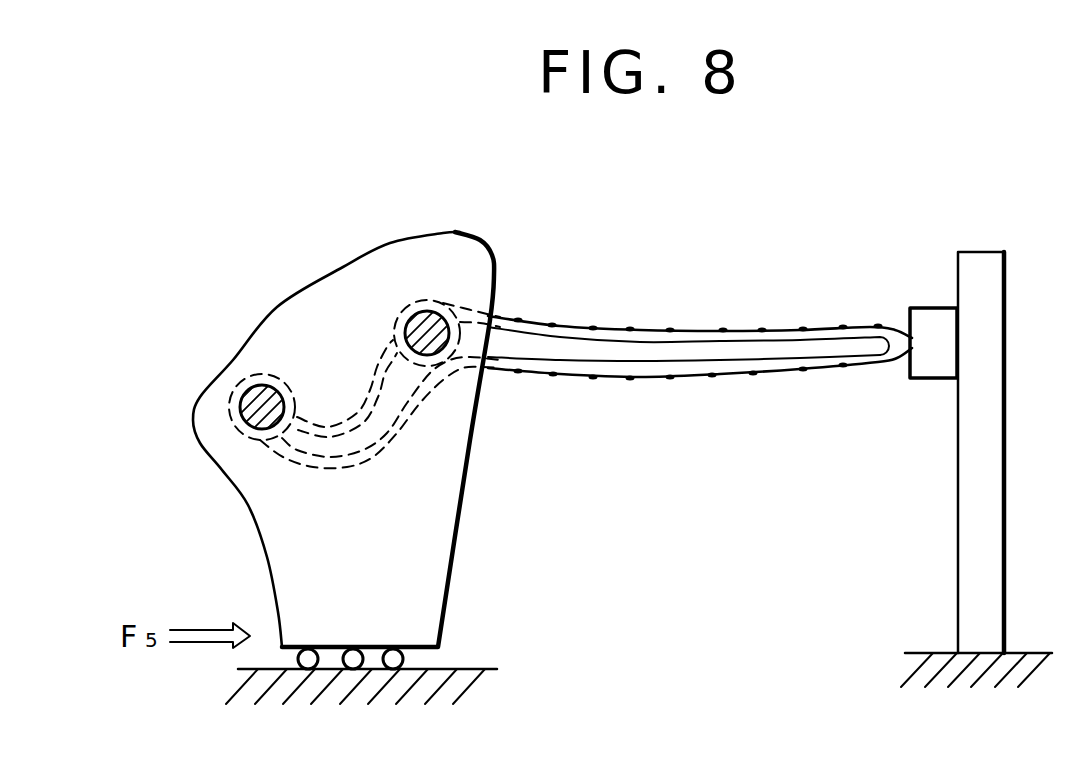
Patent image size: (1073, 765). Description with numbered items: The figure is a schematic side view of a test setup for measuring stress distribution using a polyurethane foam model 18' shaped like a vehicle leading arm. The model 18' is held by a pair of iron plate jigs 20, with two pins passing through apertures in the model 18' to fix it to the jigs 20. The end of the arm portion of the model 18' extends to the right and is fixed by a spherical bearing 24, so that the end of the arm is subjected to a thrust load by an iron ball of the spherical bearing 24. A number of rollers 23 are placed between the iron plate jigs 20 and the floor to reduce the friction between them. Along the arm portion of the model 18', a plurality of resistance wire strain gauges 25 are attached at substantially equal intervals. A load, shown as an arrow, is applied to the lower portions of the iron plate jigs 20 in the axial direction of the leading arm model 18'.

The polyurethane foam model 18' is at (700, 285).
The iron plate jig 20 is at (357, 297).
The roller 23 is at (395, 658).
The spherical bearing 24 is at (927, 316).
The resistance wire strain gauge 25 is at (803, 328).